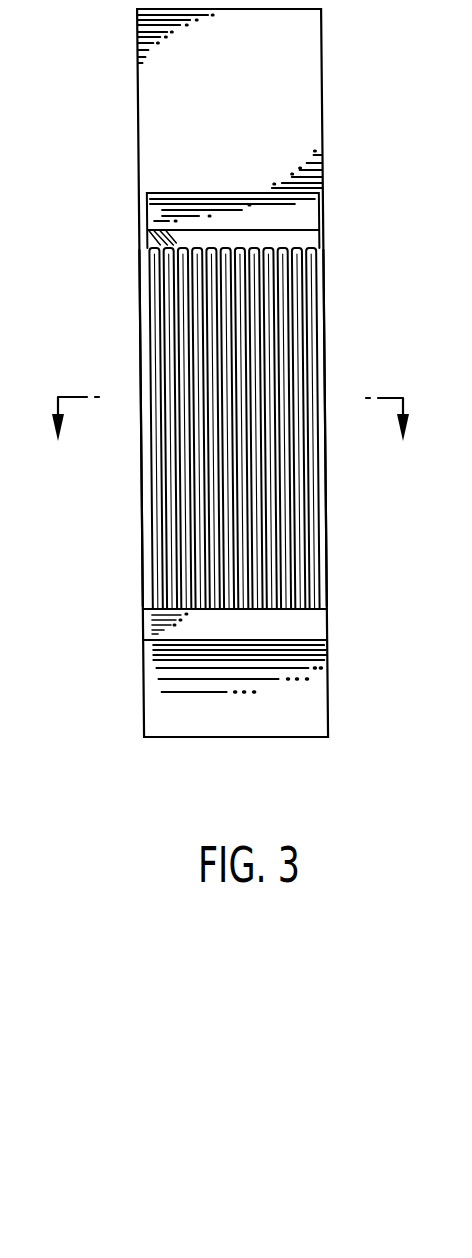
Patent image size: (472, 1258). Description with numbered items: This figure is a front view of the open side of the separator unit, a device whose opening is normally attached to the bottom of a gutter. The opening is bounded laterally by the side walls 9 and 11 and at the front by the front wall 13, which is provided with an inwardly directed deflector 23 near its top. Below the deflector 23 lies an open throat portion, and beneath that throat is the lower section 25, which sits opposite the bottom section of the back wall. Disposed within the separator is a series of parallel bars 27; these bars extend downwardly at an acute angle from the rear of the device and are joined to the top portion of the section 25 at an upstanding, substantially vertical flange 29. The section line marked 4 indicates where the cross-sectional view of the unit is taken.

The shell housing 13 is at (139, 137).
The upper header tube sheet 23 is at (162, 212).
The tubes 27 is at (186, 339).
The first side wall 9 is at (142, 512).
The second side wall 11 is at (328, 527).
The lower tube sheet 29 is at (145, 623).
The lower header 25 is at (148, 682).
The section line 4- 4 is at (229, 439).